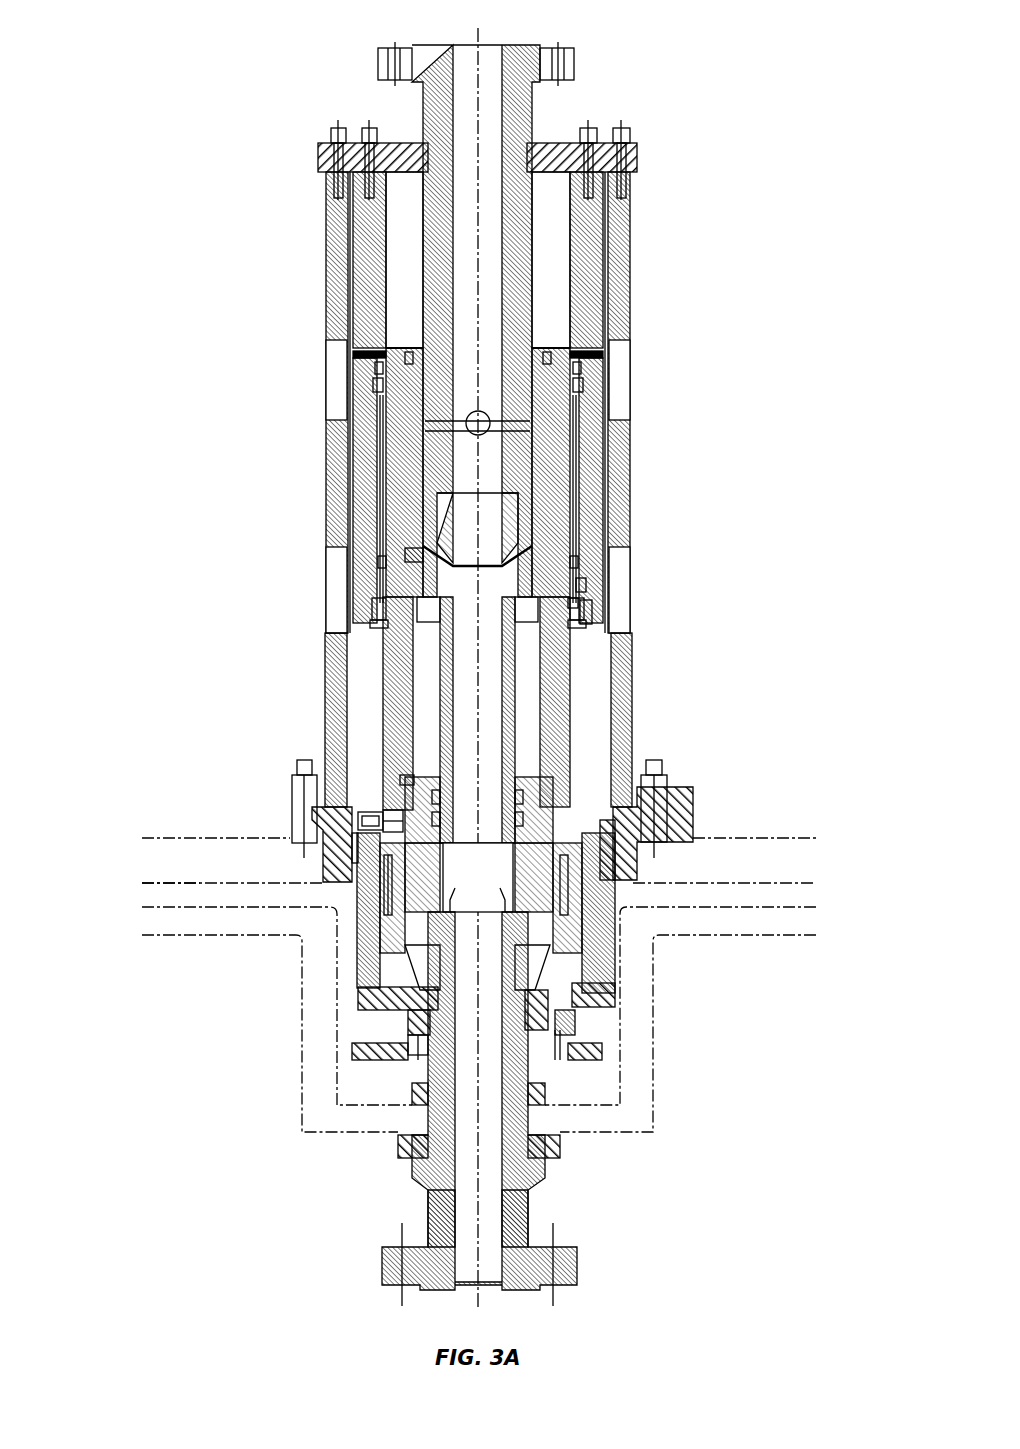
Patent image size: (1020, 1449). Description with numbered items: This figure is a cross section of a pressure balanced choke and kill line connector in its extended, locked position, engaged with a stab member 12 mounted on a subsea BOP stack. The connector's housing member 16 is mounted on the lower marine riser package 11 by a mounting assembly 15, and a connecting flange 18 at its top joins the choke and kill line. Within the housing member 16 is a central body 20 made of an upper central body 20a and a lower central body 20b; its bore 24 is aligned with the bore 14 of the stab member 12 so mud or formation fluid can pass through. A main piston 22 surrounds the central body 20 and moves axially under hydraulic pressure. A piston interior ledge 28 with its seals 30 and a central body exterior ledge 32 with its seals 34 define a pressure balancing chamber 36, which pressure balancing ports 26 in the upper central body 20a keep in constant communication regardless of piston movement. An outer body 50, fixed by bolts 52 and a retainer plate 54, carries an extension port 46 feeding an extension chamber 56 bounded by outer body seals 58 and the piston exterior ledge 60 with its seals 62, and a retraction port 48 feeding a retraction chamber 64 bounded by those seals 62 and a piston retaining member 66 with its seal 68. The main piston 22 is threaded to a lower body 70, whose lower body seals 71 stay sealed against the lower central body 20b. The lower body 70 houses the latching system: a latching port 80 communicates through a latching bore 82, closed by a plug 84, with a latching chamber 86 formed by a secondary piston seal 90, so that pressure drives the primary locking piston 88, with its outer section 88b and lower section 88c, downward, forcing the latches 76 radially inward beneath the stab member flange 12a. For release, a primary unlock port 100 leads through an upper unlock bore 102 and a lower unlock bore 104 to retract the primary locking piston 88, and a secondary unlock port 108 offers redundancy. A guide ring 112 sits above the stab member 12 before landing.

The lower marine riser package 11 is at (160, 895).
The stab member 12 is at (382, 1265).
The stab member flange 12a is at (503, 1055).
The bore 14 is at (480, 1222).
The mounting assembly 15 is at (688, 790).
The housing member 16 is at (556, 240).
The connecting flange 18 is at (380, 58).
The central body 20 is at (532, 125).
The upper central body 20a is at (532, 292).
The lower central body 20b is at (536, 640).
The main piston 22 is at (408, 555).
The bore 24 is at (485, 62).
The pressure balancing ports 26 is at (490, 421).
The piston interior ledge 28 is at (404, 345).
The seals 30 is at (408, 356).
The central body exterior ledge 32 is at (504, 627).
The seals 34 is at (516, 522).
The pressure balancing chamber 36 is at (400, 500).
The extension port 46 is at (380, 354).
The retraction port 48 is at (582, 585).
The outer body 50 is at (384, 238).
The bolts 52 is at (633, 133).
The retainer plate 54 is at (637, 160).
The extension chamber 56 is at (367, 455).
The outer body seals 58 is at (378, 366).
The piston exterior ledge 60 is at (382, 560).
The seals 62 is at (378, 600).
The retraction chamber 64 is at (573, 460).
The piston retaining member 66 is at (570, 640).
The seal 68 is at (586, 606).
The lower body 70 is at (456, 776).
The lower body seals 71 is at (456, 812).
The latches 76 is at (580, 1030).
The latching port 80 is at (370, 818).
The latching bore 82 is at (392, 812).
The plug 84 is at (383, 806).
The latching chamber 86 is at (637, 865).
The primary locking piston 88 is at (615, 995).
The outer section 88b is at (345, 910).
The lower section 88c is at (405, 1020).
The secondary piston seal 90 is at (618, 912).
The primary unlock port 100 is at (356, 840).
The upper unlock bore 102 is at (380, 950).
The lower unlock bore 104 is at (395, 975).
The secondary unlock port 108 is at (211, 867).
The guide ring 112 is at (430, 1048).